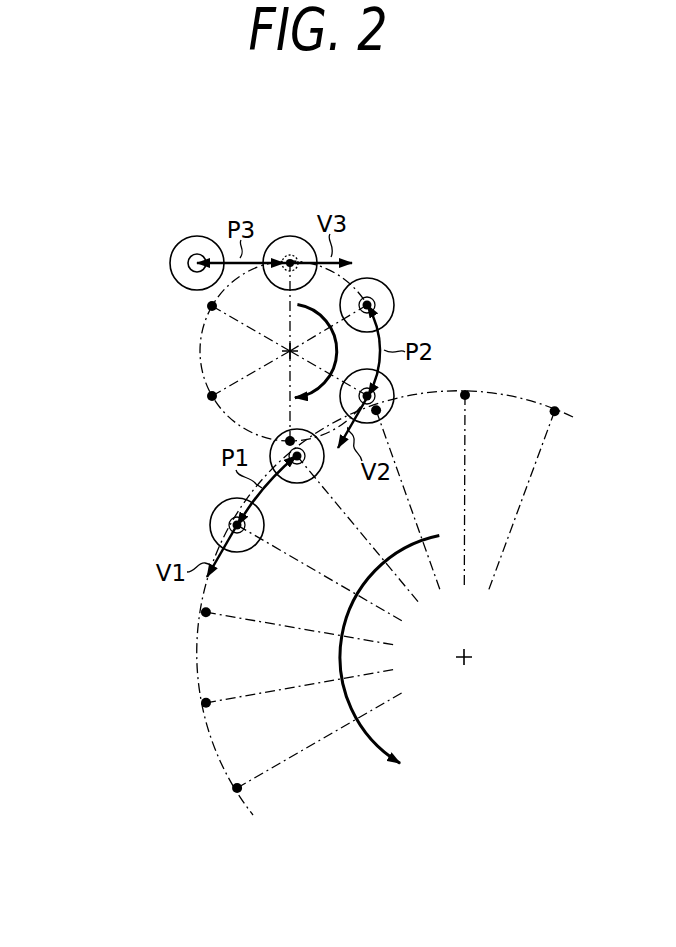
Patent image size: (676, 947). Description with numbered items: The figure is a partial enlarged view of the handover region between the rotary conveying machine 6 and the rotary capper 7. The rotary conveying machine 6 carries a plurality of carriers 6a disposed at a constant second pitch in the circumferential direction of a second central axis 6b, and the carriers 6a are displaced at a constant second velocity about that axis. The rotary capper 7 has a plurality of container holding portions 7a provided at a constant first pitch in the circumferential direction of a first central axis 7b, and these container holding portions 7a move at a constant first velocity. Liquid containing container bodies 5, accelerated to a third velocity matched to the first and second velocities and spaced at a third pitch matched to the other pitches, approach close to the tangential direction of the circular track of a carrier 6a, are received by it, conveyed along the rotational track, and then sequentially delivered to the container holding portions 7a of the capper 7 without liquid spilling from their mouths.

The liquid containing container body 5 is at (194, 237).
The rotary conveying machine 6 is at (407, 253).
The carrier 6a is at (372, 307).
The second central axis 6b is at (288, 351).
The rotary capper 7 is at (180, 651).
The container holding portion 7a is at (232, 522).
The first central axis 7b is at (466, 656).